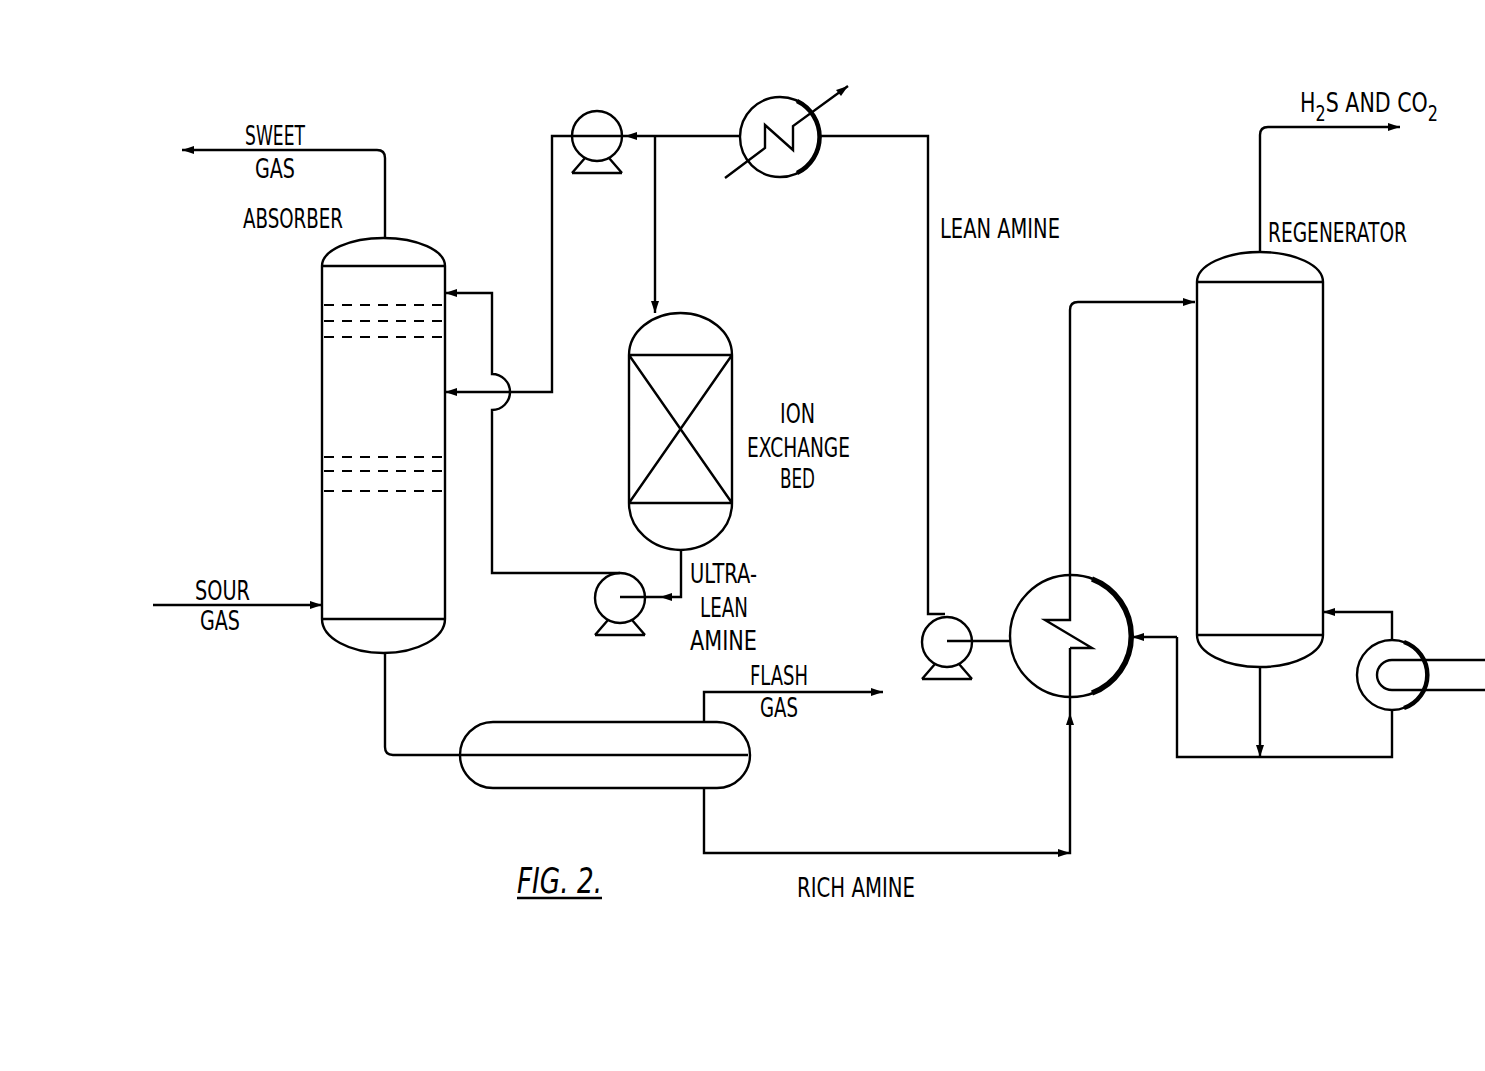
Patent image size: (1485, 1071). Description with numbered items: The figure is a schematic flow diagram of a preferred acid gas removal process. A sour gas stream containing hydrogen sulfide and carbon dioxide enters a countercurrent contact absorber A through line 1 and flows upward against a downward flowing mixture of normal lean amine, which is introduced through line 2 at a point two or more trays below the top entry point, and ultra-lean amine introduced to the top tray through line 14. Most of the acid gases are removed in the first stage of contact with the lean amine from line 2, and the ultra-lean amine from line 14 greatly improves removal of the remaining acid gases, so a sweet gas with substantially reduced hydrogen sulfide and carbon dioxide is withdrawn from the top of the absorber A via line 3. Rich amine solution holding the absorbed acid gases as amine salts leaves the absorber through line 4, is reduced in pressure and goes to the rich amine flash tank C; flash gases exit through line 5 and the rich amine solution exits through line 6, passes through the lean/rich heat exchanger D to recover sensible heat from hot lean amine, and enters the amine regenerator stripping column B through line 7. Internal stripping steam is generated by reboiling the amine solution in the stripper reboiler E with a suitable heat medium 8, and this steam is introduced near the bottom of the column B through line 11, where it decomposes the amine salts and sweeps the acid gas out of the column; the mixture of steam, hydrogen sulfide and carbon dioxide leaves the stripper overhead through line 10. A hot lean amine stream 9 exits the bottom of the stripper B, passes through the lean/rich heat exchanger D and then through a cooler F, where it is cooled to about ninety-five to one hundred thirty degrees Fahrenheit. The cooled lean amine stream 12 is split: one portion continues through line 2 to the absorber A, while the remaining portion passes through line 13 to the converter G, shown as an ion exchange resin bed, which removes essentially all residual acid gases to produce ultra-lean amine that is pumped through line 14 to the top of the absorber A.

The sour gas inlet line 1 is at (275, 606).
The lean amine line 2 is at (536, 392).
The sweet gas outlet line 3 is at (385, 170).
The rich amine line 4 is at (400, 756).
The flash gas line 5 is at (833, 693).
The rich amine outlet line 6 is at (877, 853).
The regenerator feed line 7 is at (1137, 302).
The heat medium 8 is at (1437, 660).
The hot lean amine stream 9 is at (1177, 706).
The stripper overhead line 10 is at (1260, 170).
The stripping steam line 11 is at (1375, 612).
The cooled lean amine stream 12 is at (928, 386).
The converter feed line 13 is at (655, 246).
The ultra-lean amine line 14 is at (492, 470).
The absorber A is at (392, 405).
The amine regenerator stripping column B is at (1266, 365).
The rich amine flash tank C is at (527, 720).
The lean/rich heat exchanger D is at (1028, 590).
The stripper reboiler E is at (1416, 703).
The cooler F is at (770, 97).
The converter G is at (732, 380).